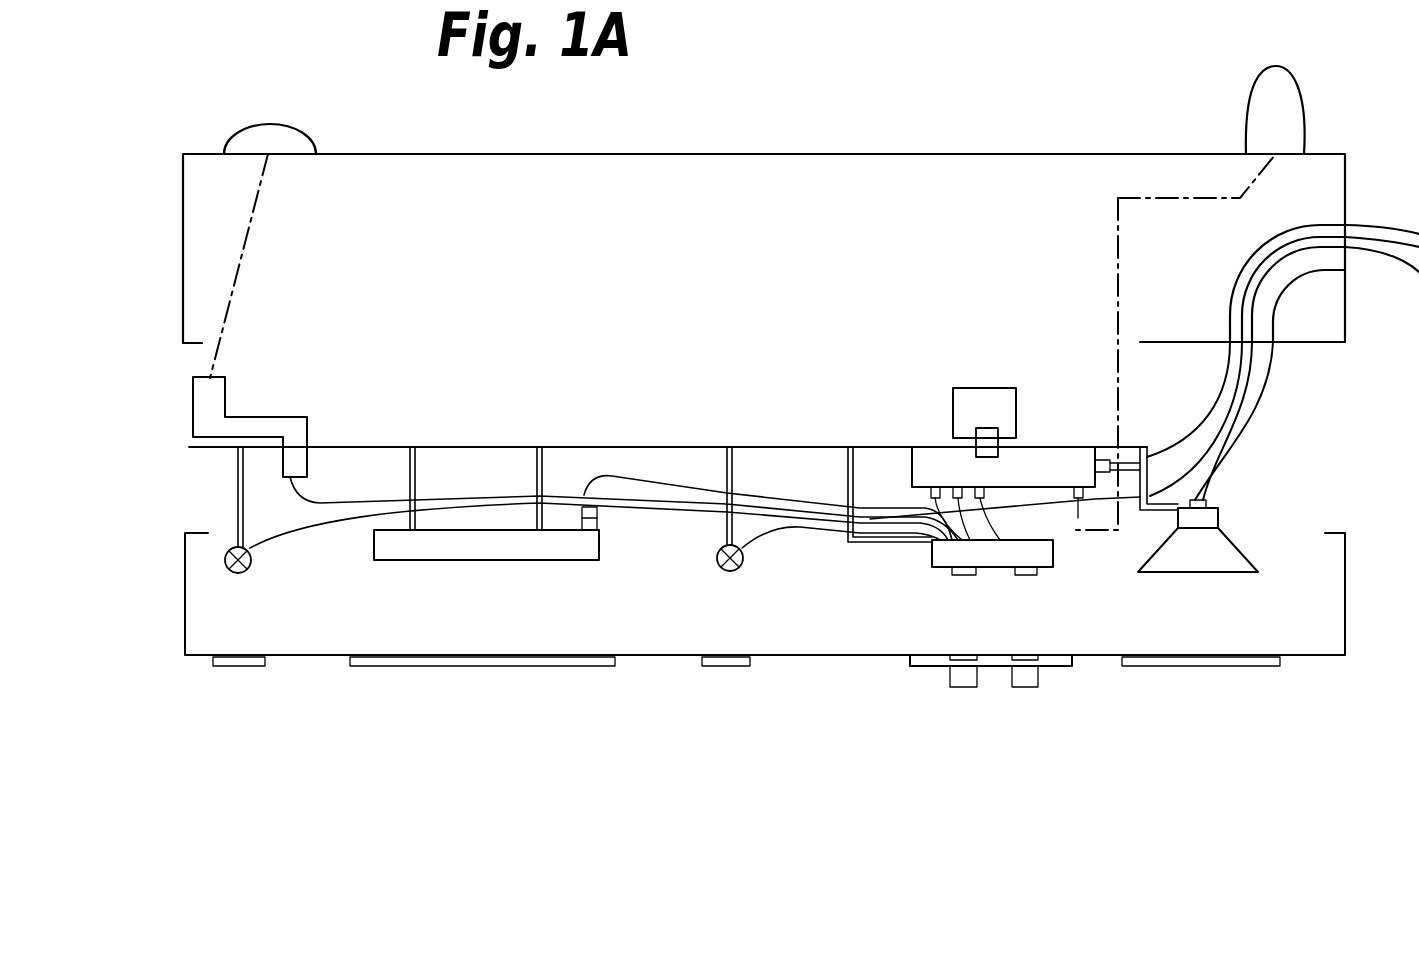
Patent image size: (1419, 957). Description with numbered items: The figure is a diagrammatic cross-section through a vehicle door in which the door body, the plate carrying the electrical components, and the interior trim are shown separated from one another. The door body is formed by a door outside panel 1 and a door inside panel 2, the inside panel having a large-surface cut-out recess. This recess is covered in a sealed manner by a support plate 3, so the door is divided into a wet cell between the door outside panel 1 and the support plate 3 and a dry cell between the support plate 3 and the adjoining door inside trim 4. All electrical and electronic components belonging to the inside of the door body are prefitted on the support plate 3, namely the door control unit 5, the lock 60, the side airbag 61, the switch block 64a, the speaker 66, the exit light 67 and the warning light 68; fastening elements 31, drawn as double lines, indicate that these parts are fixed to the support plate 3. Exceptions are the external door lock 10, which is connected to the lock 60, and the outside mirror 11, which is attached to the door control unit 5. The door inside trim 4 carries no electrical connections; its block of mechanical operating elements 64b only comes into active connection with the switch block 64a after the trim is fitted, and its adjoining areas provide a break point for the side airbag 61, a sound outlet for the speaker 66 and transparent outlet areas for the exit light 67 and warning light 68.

The door outside panel 1 is at (628, 150).
The door inside panel 2 is at (1305, 345).
The support plate 3 is at (628, 447).
The door inside trim 4 is at (858, 655).
The door control unit 5 is at (1062, 462).
The external door lock 10 is at (283, 142).
The outside mirror 11 is at (1246, 108).
The fastening elements 31 is at (235, 500).
The lock 60 is at (200, 405).
The side airbag 61 is at (458, 562).
The switch block 64a is at (995, 560).
The block of mechanical operating elements 64b is at (995, 660).
The speaker 66 is at (1198, 560).
The exit light 67 is at (740, 572).
The warning light 68 is at (250, 572).